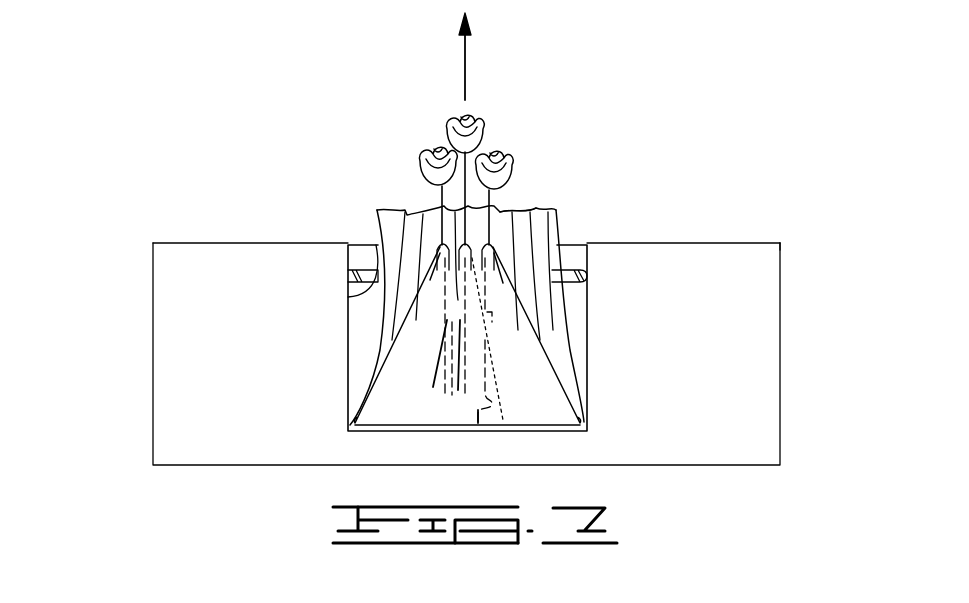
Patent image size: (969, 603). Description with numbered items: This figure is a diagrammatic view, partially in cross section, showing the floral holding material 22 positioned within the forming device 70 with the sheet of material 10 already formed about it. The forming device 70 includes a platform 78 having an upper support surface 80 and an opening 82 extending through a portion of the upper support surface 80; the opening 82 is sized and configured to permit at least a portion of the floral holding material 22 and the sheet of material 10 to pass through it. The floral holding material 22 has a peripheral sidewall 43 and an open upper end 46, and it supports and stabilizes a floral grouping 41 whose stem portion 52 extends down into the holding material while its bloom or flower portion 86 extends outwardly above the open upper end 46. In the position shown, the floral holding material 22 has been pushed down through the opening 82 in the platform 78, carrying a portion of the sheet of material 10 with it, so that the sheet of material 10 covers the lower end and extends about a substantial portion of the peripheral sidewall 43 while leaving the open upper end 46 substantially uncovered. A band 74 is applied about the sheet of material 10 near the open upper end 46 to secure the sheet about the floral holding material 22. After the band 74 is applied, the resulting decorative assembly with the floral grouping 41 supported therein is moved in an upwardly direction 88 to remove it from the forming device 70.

The sheet of material 10 is at (486, 282).
The floral holding material 22 is at (543, 336).
The floral grouping 41 is at (487, 170).
The peripheral sidewall 43 is at (388, 350).
The open upper end 46 is at (517, 213).
The stem portion 52 is at (490, 200).
The forming device 70 is at (796, 274).
The band 74 is at (566, 270).
The platform 78 is at (709, 244).
The upper support surface 80 is at (781, 245).
The opening 82 is at (348, 297).
The bloom or flower portion 86 is at (449, 127).
The upwardly direction 88 is at (466, 60).